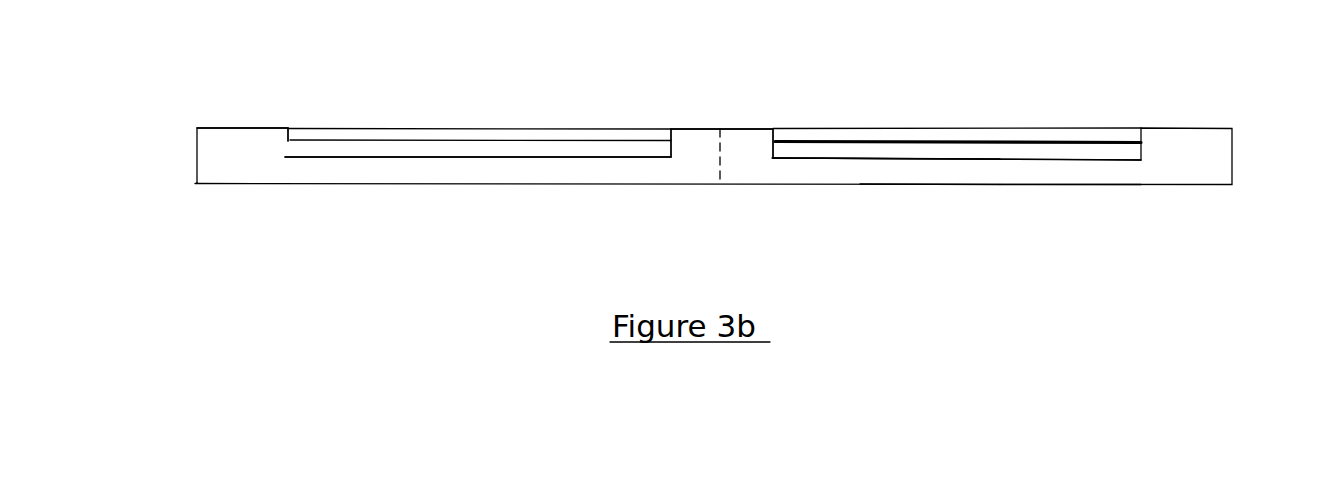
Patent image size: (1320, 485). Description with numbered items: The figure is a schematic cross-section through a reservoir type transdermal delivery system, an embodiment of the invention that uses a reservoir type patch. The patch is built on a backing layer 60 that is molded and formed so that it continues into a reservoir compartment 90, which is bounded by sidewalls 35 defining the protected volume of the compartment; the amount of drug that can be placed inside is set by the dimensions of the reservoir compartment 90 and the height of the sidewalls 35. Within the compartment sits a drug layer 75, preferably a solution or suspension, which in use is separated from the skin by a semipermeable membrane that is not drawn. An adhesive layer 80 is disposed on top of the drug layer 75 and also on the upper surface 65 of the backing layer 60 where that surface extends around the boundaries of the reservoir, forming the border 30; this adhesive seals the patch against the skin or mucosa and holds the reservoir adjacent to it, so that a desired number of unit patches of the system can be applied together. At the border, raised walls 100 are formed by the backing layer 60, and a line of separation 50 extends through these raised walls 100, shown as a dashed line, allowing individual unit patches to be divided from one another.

The border 30 is at (238, 128).
The sidewalls 35 is at (292, 130).
The line of separation 50 is at (722, 148).
The backing layer 60 is at (1067, 172).
The upper surface of the backing layer 65 is at (913, 162).
The drug layer 75 is at (1127, 153).
The adhesive layer 80 is at (1125, 135).
The reservoir compartment 90 is at (803, 157).
The raised walls 100 is at (1217, 163).